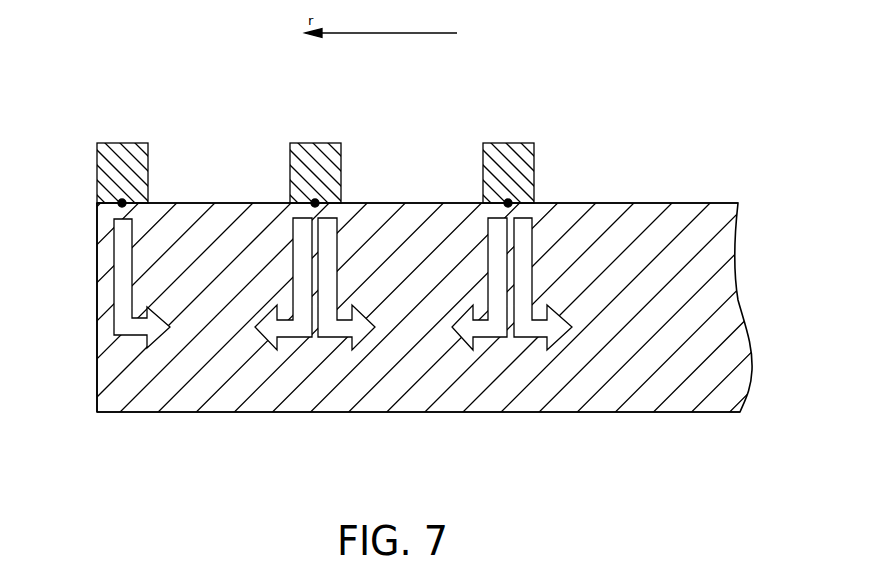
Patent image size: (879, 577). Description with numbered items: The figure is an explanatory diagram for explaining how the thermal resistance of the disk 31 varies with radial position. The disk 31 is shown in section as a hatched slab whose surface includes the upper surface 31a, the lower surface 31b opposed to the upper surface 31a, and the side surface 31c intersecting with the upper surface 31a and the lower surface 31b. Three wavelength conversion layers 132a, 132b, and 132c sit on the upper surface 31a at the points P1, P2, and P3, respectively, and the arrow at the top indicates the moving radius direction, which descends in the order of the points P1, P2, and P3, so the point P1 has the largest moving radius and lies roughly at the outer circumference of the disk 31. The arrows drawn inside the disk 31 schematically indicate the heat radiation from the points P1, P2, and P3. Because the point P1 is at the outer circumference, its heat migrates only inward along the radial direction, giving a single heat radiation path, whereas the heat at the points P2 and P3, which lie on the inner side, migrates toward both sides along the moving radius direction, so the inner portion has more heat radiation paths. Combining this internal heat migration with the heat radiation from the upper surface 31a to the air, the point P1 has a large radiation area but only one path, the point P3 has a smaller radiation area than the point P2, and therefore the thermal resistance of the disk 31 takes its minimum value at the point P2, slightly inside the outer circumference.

The disk 31 is at (692, 218).
The upper surface 31a is at (648, 203).
The lower surface 31b is at (541, 412).
The side surface 31c is at (96, 352).
The wavelength conversion layer 132a is at (112, 152).
The wavelength conversion layer 132b is at (305, 152).
The wavelength conversion layer 132c is at (498, 152).
The point P1 is at (122, 200).
The point P2 is at (315, 200).
The point P3 is at (508, 200).